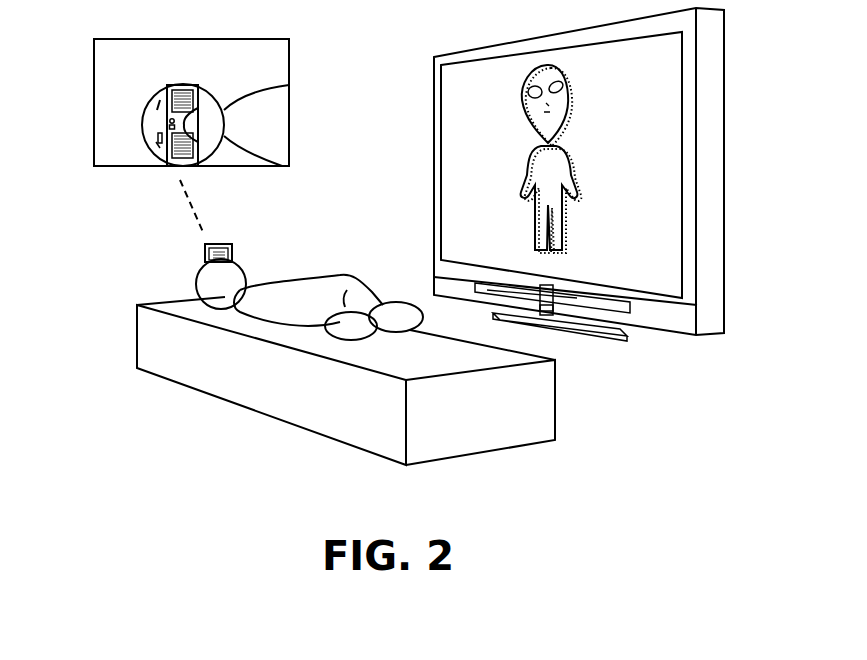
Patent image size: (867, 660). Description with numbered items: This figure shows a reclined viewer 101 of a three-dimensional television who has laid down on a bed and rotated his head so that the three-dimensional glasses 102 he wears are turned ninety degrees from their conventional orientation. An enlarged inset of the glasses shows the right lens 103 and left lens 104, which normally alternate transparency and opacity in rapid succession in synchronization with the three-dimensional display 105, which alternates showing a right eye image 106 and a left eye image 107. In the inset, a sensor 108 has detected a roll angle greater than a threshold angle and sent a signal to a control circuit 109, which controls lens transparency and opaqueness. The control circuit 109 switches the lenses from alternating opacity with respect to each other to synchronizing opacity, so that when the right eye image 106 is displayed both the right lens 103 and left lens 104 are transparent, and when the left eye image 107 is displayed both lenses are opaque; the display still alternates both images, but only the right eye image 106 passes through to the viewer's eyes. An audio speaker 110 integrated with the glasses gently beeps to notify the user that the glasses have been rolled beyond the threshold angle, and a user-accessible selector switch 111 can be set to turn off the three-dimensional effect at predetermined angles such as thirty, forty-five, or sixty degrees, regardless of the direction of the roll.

The viewer 101 is at (302, 287).
The 3D glasses 102 is at (178, 84).
The right lens 103 is at (193, 151).
The left lens 104 is at (183, 89).
The 3D display 105 is at (662, 67).
The right eye image 106 is at (531, 228).
The left eye image 107 is at (569, 242).
The sensor 108 is at (169, 123).
The control circuit 109 is at (169, 129).
The audio speaker 110 is at (161, 138).
The selector switch 111 is at (155, 148).